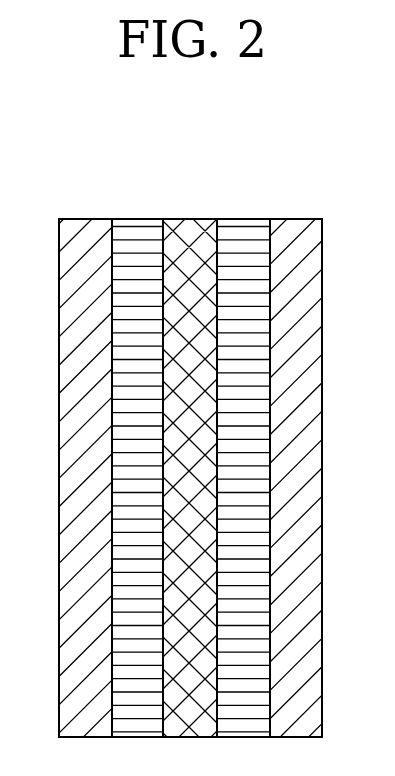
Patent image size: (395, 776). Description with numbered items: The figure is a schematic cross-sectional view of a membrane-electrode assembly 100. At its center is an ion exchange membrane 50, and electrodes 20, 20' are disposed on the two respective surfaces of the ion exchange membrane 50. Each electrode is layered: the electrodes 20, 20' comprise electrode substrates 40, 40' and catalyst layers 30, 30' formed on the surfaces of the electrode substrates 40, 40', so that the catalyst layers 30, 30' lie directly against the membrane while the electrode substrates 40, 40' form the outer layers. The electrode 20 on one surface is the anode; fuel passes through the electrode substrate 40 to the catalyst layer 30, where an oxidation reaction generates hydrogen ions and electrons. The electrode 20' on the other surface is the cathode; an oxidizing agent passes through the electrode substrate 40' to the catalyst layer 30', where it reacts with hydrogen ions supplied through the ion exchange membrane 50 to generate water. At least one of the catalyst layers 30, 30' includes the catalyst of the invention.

The membrane-electrode assembly 100 is at (208, 115).
The electrode 20 is at (111, 431).
The electrode 20' is at (269, 431).
The catalyst layer 30 is at (137, 448).
The catalyst layer 30' is at (243, 448).
The electrode substrate 40 is at (85, 468).
The electrode substrate 40' is at (296, 468).
The ion exchange membrane 50 is at (188, 230).